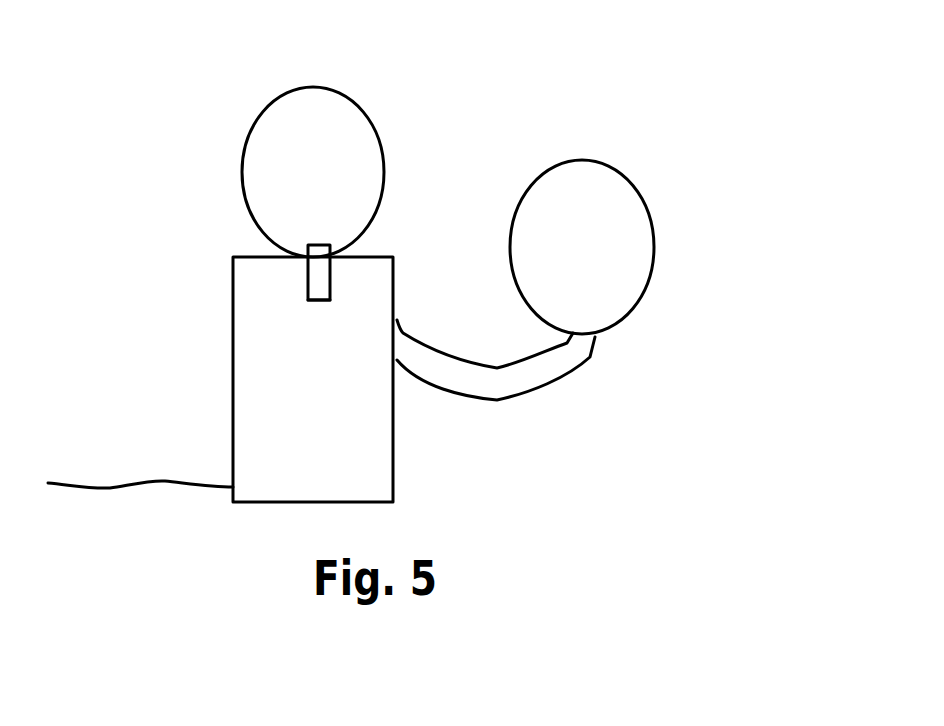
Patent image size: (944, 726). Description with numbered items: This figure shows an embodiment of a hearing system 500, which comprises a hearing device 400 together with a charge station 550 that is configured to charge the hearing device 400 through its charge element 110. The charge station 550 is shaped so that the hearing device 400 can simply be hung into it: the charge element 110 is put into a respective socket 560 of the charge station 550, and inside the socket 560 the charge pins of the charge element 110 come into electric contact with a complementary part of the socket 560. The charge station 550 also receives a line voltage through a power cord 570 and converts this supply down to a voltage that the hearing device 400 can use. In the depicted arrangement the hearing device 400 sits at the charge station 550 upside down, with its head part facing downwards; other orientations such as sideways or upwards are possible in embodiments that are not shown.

The charge element 110 is at (317, 278).
The hearing device 400 is at (340, 127).
The hearing system 500 is at (723, 137).
The charge station 550 is at (257, 377).
The socket 560 is at (315, 300).
The power cord 570 is at (110, 487).